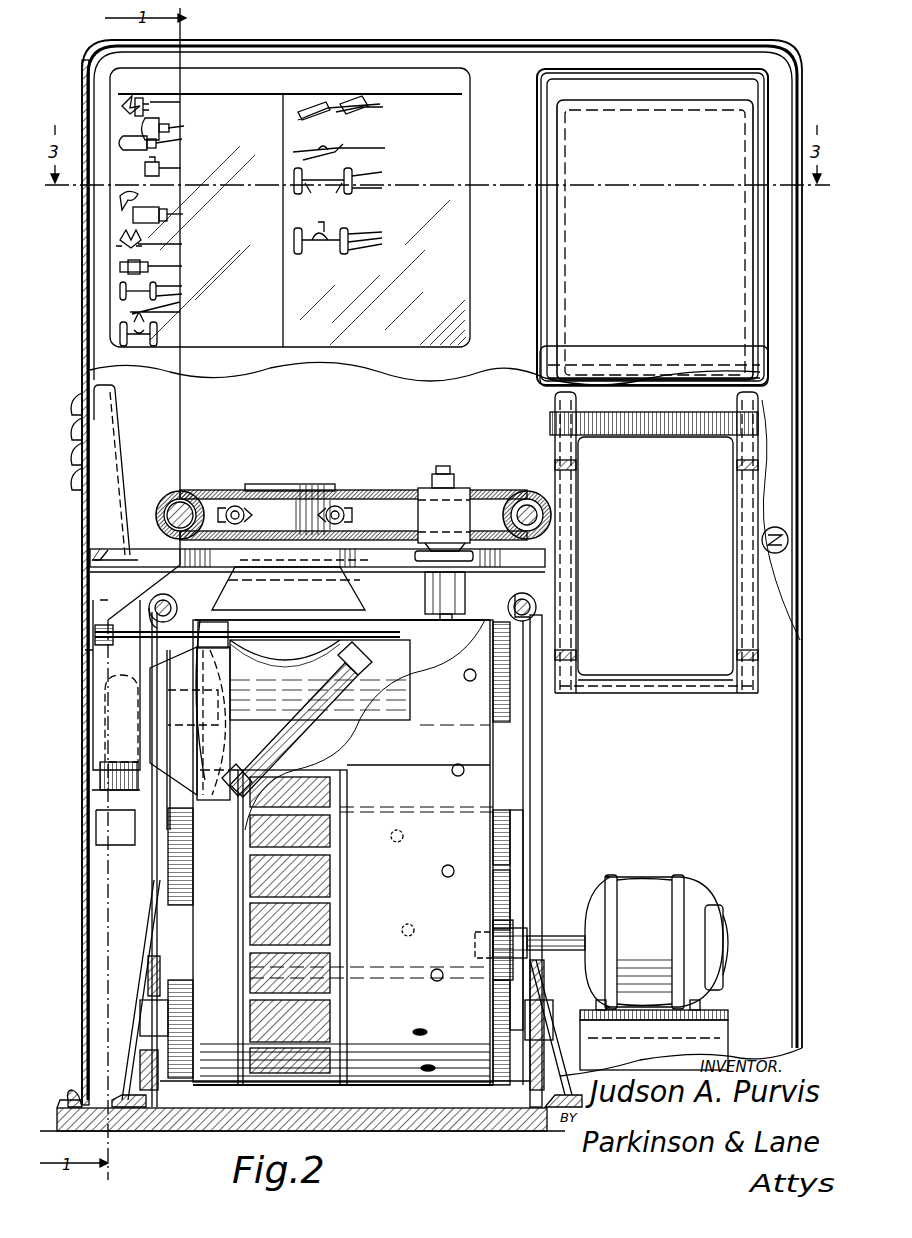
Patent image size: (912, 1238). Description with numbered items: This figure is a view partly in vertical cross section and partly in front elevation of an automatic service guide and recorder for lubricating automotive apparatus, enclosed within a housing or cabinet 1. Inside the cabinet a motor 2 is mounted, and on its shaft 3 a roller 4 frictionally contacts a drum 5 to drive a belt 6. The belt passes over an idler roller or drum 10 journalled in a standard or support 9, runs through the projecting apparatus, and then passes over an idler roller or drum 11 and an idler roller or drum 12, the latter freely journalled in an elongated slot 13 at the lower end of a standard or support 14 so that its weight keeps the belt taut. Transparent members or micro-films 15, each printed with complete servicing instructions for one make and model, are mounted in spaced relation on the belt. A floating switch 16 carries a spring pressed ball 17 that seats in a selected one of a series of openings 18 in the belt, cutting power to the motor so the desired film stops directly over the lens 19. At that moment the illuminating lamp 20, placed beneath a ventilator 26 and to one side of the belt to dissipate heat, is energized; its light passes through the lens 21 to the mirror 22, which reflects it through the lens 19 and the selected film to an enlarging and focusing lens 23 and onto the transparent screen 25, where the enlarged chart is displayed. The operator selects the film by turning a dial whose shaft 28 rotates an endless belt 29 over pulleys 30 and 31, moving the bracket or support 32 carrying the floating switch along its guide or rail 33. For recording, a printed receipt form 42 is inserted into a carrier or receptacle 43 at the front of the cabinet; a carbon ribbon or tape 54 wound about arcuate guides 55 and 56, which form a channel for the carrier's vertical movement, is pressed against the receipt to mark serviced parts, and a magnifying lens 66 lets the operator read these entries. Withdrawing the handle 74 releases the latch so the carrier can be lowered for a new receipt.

The housing or cabinet 1 is at (830, 340).
The motor 2 is at (640, 882).
The shaft 3 is at (540, 945).
The roller 4 is at (505, 948).
The drum 5 is at (512, 840).
The belt 6 is at (488, 780).
The standard or support 9 is at (543, 745).
The idler roller or drum 10 is at (360, 715).
The idler roller or drum 11 is at (442, 651).
The idler roller or drum 12 is at (502, 1100).
The elongated slot 13 is at (535, 1062).
The standard or support 14 is at (560, 1090).
The transparent members or micro-films 15 is at (330, 608).
The floating switch 16 is at (475, 592).
The spring pressed ball 17 is at (445, 618).
The openings 18 is at (468, 680).
The lens 19 is at (283, 645).
The illuminating lamp 20 is at (104, 705).
The lens 21 is at (290, 738).
The mirror 22 is at (297, 719).
The enlarging and focusing lens 23 is at (325, 486).
The transparent screen 25 is at (462, 112).
The ventilator 26 is at (98, 465).
The shaft 28 is at (182, 512).
The endless belt 29 is at (362, 500).
The pulley 30 is at (510, 515).
The pulley 31 is at (195, 500).
The bracket or support 32 is at (456, 490).
The guide or rail 33 is at (143, 555).
The printed receipt form 42 is at (752, 128).
The carrier or receptacle 43 is at (700, 600).
The carbon ribbon or tape 54 is at (556, 420).
The arcuate guide 55 is at (556, 447).
The arcuate guide 56 is at (755, 640).
The magnifying lens 66 is at (645, 368).
The handle 74 is at (788, 540).